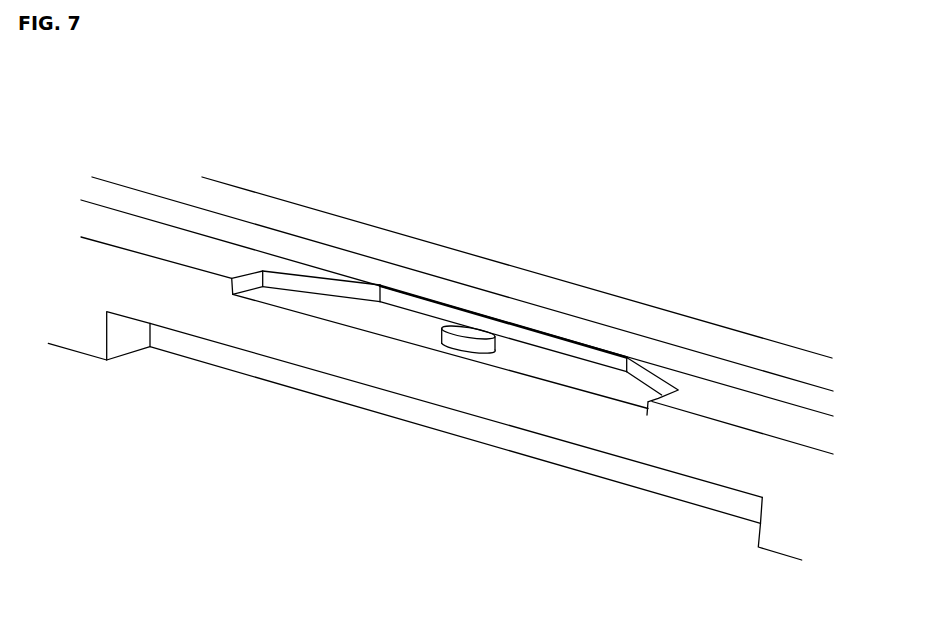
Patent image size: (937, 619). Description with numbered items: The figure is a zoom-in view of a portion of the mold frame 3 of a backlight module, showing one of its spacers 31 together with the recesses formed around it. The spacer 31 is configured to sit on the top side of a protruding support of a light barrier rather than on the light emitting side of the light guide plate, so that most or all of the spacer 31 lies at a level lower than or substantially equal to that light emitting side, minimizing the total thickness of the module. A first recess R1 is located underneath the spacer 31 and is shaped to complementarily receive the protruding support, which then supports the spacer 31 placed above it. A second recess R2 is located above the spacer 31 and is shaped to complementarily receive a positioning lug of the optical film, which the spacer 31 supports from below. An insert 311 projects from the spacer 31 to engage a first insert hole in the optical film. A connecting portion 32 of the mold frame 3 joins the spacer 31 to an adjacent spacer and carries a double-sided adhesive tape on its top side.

The mold frame 3 is at (298, 215).
The spacer 31 is at (424, 427).
The insert 311 is at (460, 347).
The connecting portion 32 is at (86, 333).
The first recess R1 is at (318, 412).
The second recess R2 is at (542, 357).